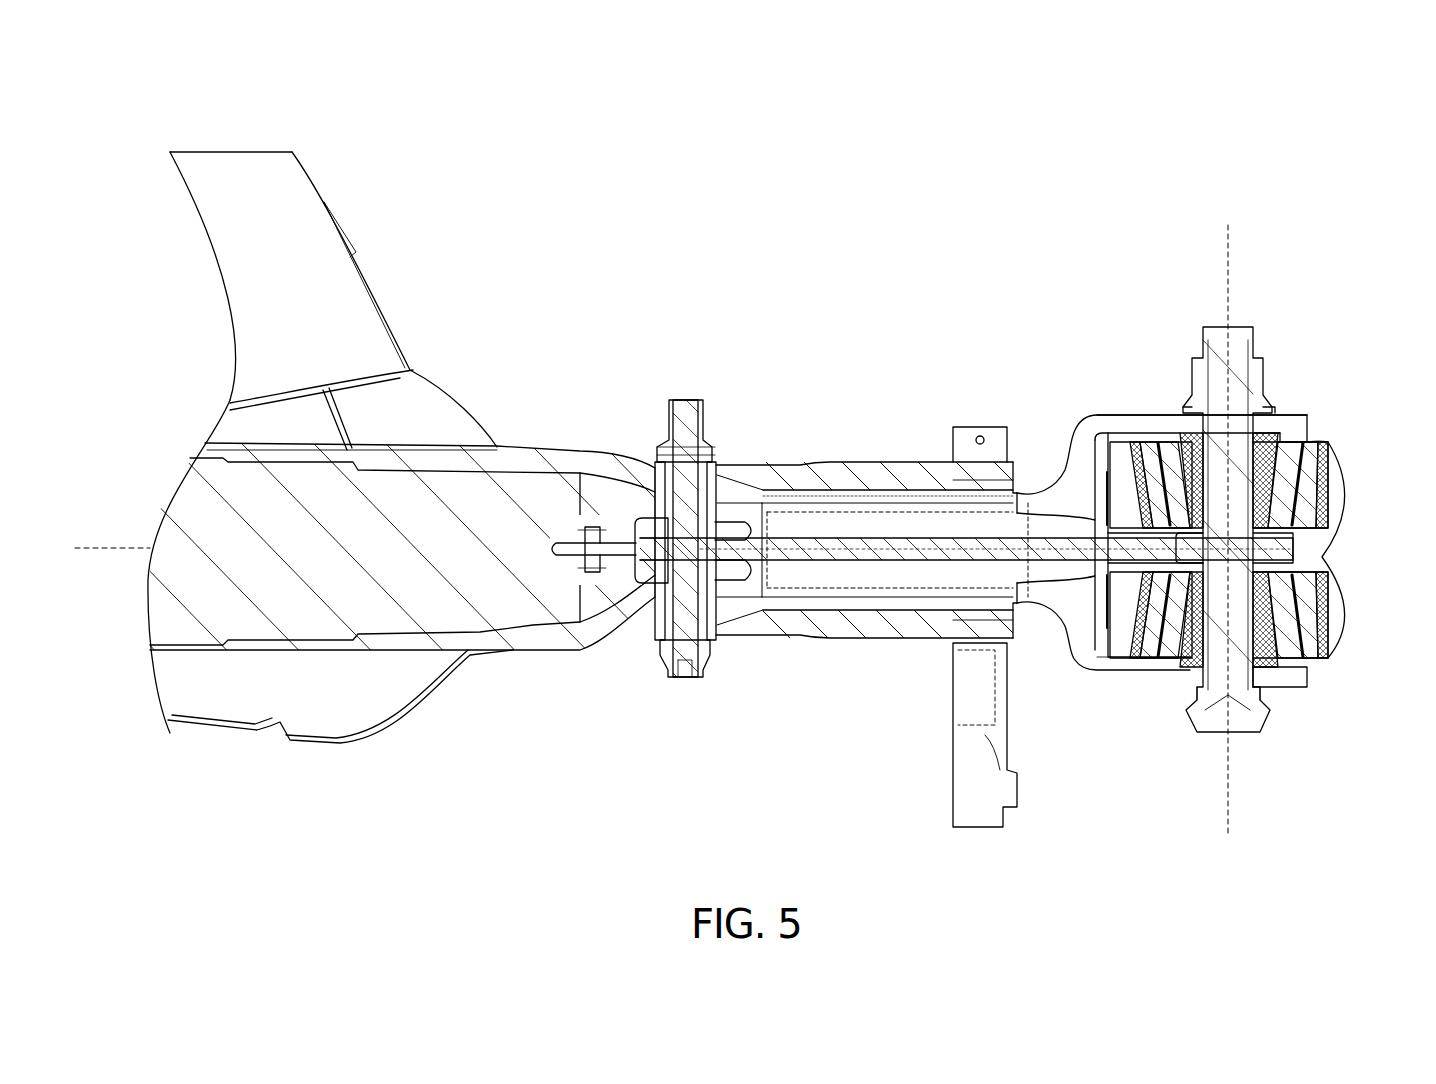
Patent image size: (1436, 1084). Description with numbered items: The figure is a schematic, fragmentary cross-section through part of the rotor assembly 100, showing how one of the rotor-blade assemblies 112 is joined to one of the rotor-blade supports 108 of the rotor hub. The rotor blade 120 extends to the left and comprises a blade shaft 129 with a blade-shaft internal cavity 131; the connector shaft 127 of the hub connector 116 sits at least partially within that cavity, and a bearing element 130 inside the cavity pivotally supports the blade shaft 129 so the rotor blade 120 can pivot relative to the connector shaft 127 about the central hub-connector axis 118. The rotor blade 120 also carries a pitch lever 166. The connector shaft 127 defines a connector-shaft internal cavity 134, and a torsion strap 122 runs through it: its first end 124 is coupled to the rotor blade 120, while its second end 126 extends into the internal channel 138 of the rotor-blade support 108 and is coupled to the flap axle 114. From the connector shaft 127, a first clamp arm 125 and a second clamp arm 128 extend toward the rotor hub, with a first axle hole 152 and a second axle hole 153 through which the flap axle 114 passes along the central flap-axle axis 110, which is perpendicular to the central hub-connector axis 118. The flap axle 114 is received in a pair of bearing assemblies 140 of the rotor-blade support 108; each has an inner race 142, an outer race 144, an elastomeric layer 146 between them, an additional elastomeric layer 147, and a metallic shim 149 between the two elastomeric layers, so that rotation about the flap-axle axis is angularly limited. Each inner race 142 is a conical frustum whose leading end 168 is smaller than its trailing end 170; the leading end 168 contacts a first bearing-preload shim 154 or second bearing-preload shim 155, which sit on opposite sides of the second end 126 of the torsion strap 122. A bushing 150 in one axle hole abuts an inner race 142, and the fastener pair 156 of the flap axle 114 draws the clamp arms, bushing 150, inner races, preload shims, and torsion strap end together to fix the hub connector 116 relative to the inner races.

The rotor assembly 100 is at (640, 102).
The rotor-blade supports 108 is at (1085, 690).
The central flap-axle axis 110 is at (1231, 270).
The rotor-blade assemblies 112 is at (686, 254).
The flap axle 114 is at (1222, 328).
The hub connector 116 is at (1075, 670).
The central hub-connector axis 118 is at (128, 549).
The rotor blade 120 is at (237, 146).
The torsion strap 122 is at (815, 566).
The first end 124 is at (640, 602).
The first clamp arm 125 is at (1096, 660).
The second end 126 is at (1290, 532).
The connector shaft 127 is at (896, 500).
The second clamp arm 128 is at (1100, 414).
The blade shaft 129 is at (859, 490).
The bearing element 130 is at (796, 480).
The blade-shaft internal cavity 131 is at (851, 494).
The connector-shaft internal cavity 134 is at (877, 582).
The internal channel 138 is at (1330, 590).
The pair of bearing assemblies 140 is at (1283, 358).
The inner race 142 is at (1176, 465).
The outer race 144 is at (1330, 462).
The elastomeric layer 146 is at (1310, 437).
The additional elastomeric layer 147 is at (1300, 425).
The metallic shim 149 is at (1300, 480).
The bushing 150 is at (1187, 700).
The first axle hole 152 is at (1253, 700).
The second axle hole 153 is at (1198, 432).
The first bearing-preload shim 154 is at (1040, 640).
The second bearing-preload shim 155 is at (1045, 520).
The fastener pair 156 is at (1282, 312).
The pitch lever 166 is at (965, 780).
The leading end 168 is at (1290, 565).
The trailing end 170 is at (1265, 437).